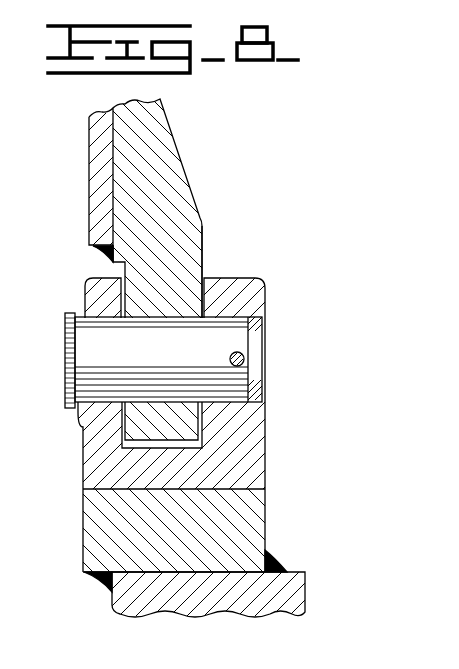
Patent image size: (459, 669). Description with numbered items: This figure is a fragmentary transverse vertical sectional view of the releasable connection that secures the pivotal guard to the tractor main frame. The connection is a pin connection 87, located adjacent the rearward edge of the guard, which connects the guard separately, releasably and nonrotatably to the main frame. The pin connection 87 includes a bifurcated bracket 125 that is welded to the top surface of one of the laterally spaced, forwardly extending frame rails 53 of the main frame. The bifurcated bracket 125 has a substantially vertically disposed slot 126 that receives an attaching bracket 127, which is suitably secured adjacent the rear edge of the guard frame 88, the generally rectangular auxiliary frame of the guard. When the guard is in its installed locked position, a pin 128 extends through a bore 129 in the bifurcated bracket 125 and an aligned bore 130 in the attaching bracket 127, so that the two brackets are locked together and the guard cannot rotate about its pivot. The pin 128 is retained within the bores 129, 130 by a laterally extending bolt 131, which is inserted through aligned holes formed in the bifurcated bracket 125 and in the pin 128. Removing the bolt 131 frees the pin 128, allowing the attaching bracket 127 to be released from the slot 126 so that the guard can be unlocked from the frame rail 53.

The guard frame 88 is at (87, 172).
The attaching bracket 127 is at (170, 151).
The slot 126 is at (200, 287).
The pin 128 is at (101, 338).
The bore 130 is at (198, 320).
The bore 129 is at (252, 324).
The bolt 131 is at (244, 361).
The pin connection 87 is at (273, 393).
The bifurcated bracket 125 is at (258, 446).
The frame rail 53 is at (300, 590).